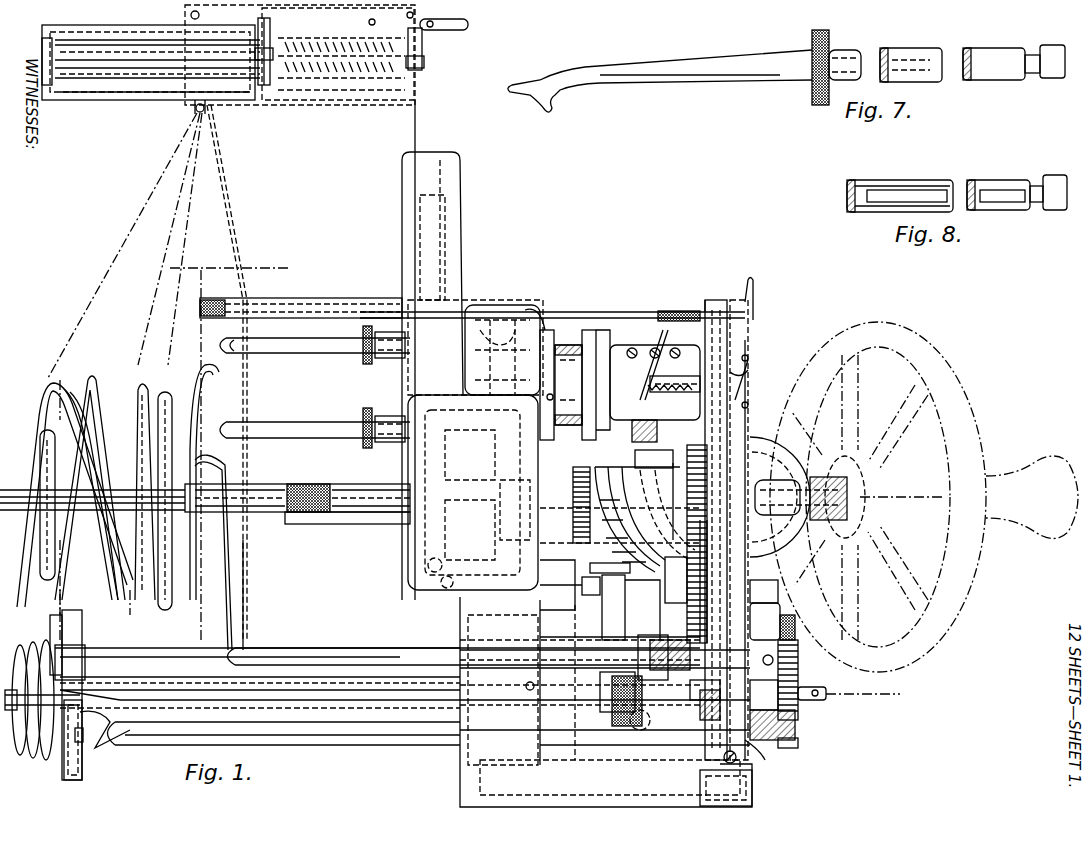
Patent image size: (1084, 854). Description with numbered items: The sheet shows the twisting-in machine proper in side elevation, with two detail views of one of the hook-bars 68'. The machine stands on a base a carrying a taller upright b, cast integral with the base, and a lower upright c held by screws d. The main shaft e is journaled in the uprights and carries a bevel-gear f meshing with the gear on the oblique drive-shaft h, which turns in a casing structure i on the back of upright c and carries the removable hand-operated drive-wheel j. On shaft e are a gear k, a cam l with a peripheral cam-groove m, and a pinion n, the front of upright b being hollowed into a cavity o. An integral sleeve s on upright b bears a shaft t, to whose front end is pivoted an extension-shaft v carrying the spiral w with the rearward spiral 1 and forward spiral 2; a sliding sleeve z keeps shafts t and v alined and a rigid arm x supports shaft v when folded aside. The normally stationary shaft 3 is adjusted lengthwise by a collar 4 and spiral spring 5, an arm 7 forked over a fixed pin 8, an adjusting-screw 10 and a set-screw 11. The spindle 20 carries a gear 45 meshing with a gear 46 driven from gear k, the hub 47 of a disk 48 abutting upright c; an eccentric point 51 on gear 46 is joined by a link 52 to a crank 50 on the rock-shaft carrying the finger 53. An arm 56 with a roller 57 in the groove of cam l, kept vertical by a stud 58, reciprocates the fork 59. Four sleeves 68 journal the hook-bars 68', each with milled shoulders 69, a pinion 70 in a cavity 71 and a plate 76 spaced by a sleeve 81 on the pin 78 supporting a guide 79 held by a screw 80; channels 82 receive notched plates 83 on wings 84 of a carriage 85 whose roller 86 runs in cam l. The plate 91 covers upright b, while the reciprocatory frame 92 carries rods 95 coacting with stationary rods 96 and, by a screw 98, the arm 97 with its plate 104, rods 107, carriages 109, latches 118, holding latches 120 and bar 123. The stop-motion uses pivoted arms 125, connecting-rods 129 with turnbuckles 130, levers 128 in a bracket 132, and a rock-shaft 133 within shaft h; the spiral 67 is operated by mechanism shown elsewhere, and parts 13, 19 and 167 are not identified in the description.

In FIG. 1, the rectangular plate 104 is at (44, 36).
In FIG. 1, the rods 107 is at (98, 78).
In FIG. 1, the arm 97 is at (100, 100).
In FIG. 1, the latch 118 is at (262, 88).
In FIG. 1, the carriages 109 is at (318, 98).
In FIG. 1, the latches 120 is at (448, 30).
In FIG. 1, the screw 98 is at (424, 60).
In FIG. 1, the reciprocatory frame 92 is at (436, 132).
In FIG. 1, the horizontal bar 123 is at (196, 112).
In FIG. 1, the pivoted arms 125 is at (288, 308).
In FIG. 1, the hook-bars 68' is at (315, 357).
In FIG. 7, the hook-bars 68' is at (972, 56).
In FIG. 1, the sleeves 68 is at (384, 387).
In FIG. 1, the milled shoulders 69 is at (365, 412).
In FIG. 7, the milled shoulders 69 is at (830, 44).
In FIG. 1, the spiral 2 is at (80, 400).
In FIG. 1, the spiral w is at (80, 542).
In FIG. 1, the spiral 1 is at (190, 408).
In FIG. 1, the extension-shaft v is at (216, 510).
In FIG. 1, the sleeve z is at (290, 484).
In FIG. 1, the shaft t is at (345, 486).
In FIG. 1, the sleeve s is at (386, 486).
In FIG. 1, the rigid arm x is at (345, 526).
In FIG. 1, the plate 91 is at (412, 574).
In FIG. 1, the finger 53 is at (246, 600).
In FIG. 1, the pinion 70 is at (500, 340).
In FIG. 1, the cavity 71 is at (520, 300).
In FIG. 1, the plate 76 is at (548, 340).
In FIG. 1, the notched plates 83 is at (606, 335).
In FIG. 1, the pin 78 is at (566, 385).
In FIG. 1, the spacing-sleeve 81 is at (552, 400).
In FIG. 1, the carriage 85 is at (622, 350).
In FIG. 1, the connecting-rod 129 is at (660, 312).
In FIG. 1, the turnbuckle 130 is at (675, 348).
In FIG. 1, the guide 79 is at (706, 308).
In FIG. 1, the wings 84 is at (645, 386).
In FIG. 1, the rock-shaft 133 is at (700, 382).
In FIG. 1, the antifriction-roller 86 is at (640, 420).
In FIG. 1, the cam l is at (618, 470).
In FIG. 1, the pinion n is at (581, 494).
In FIG. 1, the peripheral cam-groove m is at (630, 445).
In FIG. 1, the main shaft e is at (692, 450).
In FIG. 1, the gear k is at (687, 548).
In FIG. 1, the bevel-gear f is at (726, 530).
In FIG. 1, the lever 128 is at (752, 300).
In FIG. 1, the screw 80 is at (748, 356).
In FIG. 1, the bracket 132 is at (735, 388).
In FIG. 1, the drive-shaft h is at (815, 478).
In FIG. 1, the casing structure i is at (795, 540).
In FIG. 1, the drive-wheel j is at (938, 622).
In FIG. 1, the roller 57 is at (590, 566).
In FIG. 1, the fixed stud 58 is at (582, 588).
In FIG. 1, the arm 56 is at (604, 608).
In FIG. 1, the eccentric point 51 is at (660, 575).
In FIG. 1, the link 52 is at (605, 620).
In FIG. 1, the crank 50 is at (636, 640).
In FIG. 1, the fixed collar 4 is at (645, 646).
In FIG. 1, the spiral spring 5 is at (668, 640).
In FIG. 1, the gear 46 is at (690, 600).
In FIG. 1, the cavity o is at (580, 636).
In FIG. 1, the upright b is at (542, 628).
In FIG. 1, the base a is at (580, 772).
In FIG. 1, the spindle 20 is at (640, 725).
In FIG. 1, the gear 45 is at (670, 720).
In FIG. 1, the fixed pin 8 is at (780, 592).
In FIG. 1, the arm 7 is at (780, 615).
In FIG. 1, the adjusting-screw 10 is at (796, 628).
In FIG. 1, the set-screw 11 is at (774, 662).
In FIG. 1, the disk 48 is at (796, 706).
In FIG. 1, the pin 167 is at (828, 694).
In FIG. 1, the hub 47 is at (796, 725).
In FIG. 1, the upright c is at (751, 757).
In FIG. 1, the screws d is at (752, 784).
In FIG. 1, the normally stationary shaft 3 is at (180, 656).
In FIG. 1, the fork 59 is at (292, 688).
In FIG. 1, the stationary horizontal rods 96 is at (352, 746).
In FIG. 1, the horizontal rods 95 is at (136, 730).
In FIG. 1, the plate 13 is at (50, 622).
In FIG. 1, the plate 19 is at (84, 746).
In FIG. 1, the spiral 67 is at (52, 758).
In FIG. 8, the peripheral channels 82 is at (1042, 212).